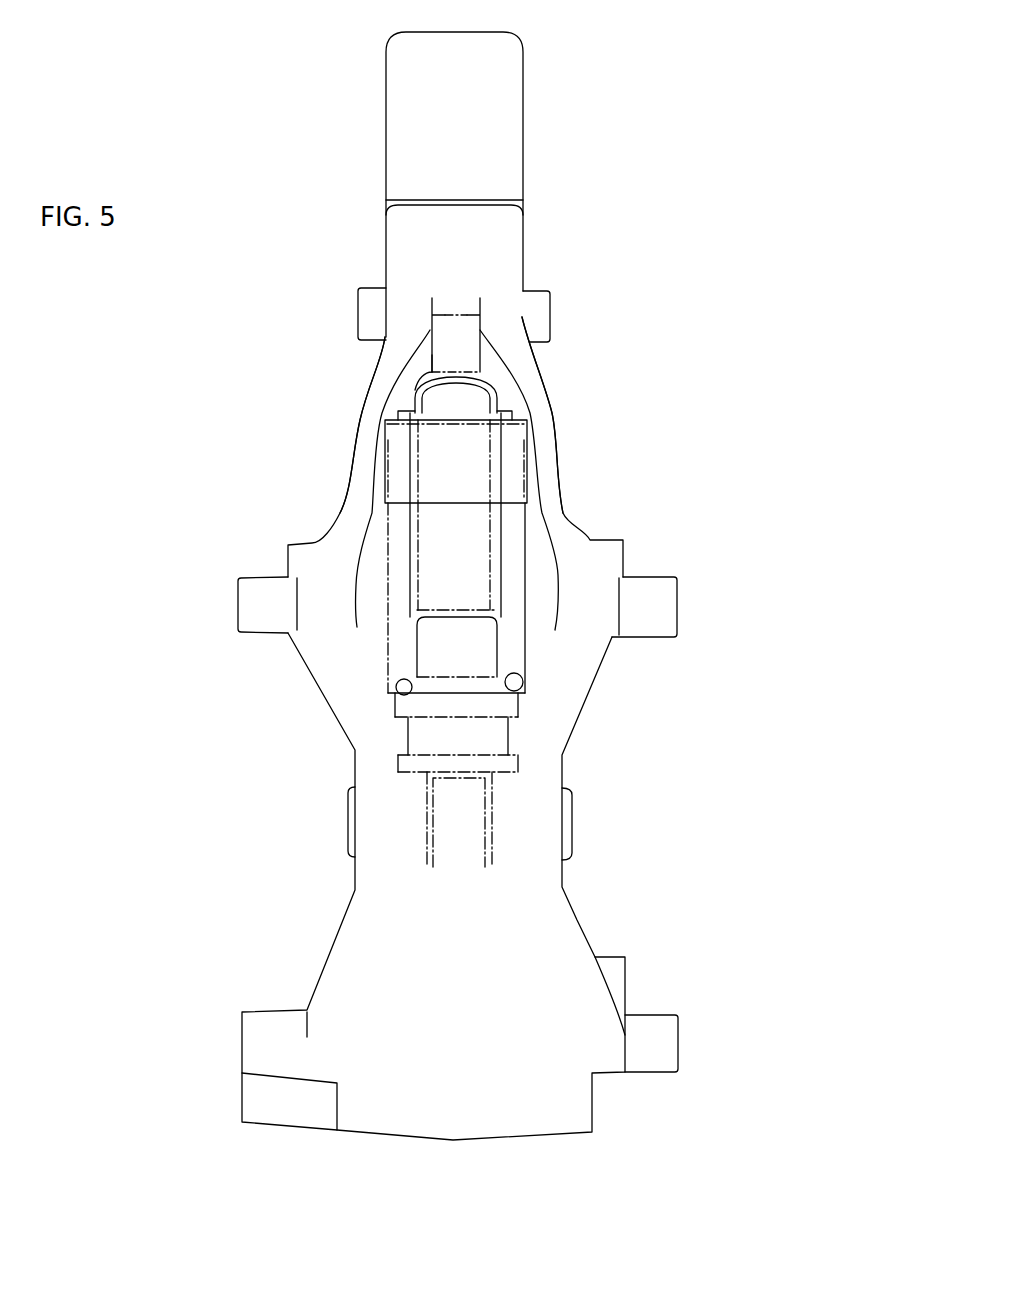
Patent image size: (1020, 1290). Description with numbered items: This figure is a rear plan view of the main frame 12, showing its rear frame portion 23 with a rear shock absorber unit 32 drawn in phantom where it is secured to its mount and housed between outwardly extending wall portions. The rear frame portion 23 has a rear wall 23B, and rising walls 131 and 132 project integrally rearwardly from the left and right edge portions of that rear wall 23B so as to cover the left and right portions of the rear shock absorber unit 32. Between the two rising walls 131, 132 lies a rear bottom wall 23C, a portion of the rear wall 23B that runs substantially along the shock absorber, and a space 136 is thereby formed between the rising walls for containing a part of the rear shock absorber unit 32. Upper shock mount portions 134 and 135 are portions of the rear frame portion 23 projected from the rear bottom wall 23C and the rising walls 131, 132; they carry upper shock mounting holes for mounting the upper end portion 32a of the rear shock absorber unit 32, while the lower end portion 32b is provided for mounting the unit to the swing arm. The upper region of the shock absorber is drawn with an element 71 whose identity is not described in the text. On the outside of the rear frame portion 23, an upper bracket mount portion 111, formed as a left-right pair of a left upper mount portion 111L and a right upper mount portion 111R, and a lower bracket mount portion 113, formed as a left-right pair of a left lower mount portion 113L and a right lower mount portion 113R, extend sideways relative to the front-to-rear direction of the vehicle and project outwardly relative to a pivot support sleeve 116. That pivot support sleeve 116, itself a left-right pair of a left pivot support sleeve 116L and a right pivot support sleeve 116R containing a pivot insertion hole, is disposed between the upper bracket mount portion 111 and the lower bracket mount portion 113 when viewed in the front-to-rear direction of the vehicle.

The main frame 12 is at (501, 728).
The rear frame portion 23 is at (376, 728).
The rear wall 23B is at (546, 245).
The rear bottom wall 23C is at (545, 461).
The rear shock absorber unit 32 is at (573, 592).
The upper end portion 32a is at (458, 313).
The lower end portion 32b is at (427, 855).
The upper cylindrical member 71 is at (385, 105).
The upper bracket mount portion 111 is at (457, 561).
The left upper mount portion 111L is at (252, 605).
The right upper mount portion 111R is at (655, 609).
The lower bracket mount portion 113 is at (459, 1033).
The left lower mount portion 113L is at (257, 1048).
The right lower mount portion 113R is at (653, 1042).
The pivot support sleeve 116 is at (474, 792).
The left pivot support sleeve 116L is at (353, 815).
The right pivot support sleeve 116R is at (572, 822).
The rising wall 131 is at (365, 427).
The rising wall 132 is at (547, 427).
The upper shock mount portion 134 is at (422, 360).
The upper shock mount portion 135 is at (490, 358).
The space 136 is at (360, 480).